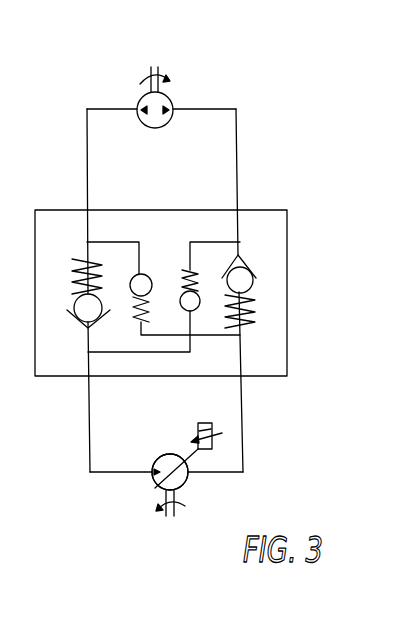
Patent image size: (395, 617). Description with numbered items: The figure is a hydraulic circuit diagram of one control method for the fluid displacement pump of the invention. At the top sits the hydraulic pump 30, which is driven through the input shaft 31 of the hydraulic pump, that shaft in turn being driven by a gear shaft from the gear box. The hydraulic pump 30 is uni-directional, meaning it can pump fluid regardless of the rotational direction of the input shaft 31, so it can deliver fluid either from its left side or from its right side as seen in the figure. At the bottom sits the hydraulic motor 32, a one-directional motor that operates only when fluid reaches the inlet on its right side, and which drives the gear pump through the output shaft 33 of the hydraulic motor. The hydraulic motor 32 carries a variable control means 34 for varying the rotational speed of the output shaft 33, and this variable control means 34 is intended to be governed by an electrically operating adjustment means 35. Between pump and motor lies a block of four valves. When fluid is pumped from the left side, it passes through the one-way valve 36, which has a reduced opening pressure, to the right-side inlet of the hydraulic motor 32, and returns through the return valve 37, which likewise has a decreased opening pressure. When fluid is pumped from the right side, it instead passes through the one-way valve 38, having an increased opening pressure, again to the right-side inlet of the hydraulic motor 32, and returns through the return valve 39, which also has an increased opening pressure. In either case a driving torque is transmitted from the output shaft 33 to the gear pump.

The hydraulic pump 30 is at (177, 96).
The input shaft of the hydraulic pump 31 is at (150, 66).
The hydraulic motor 32 is at (190, 485).
The output shaft of the hydraulic motor 33 is at (164, 511).
The variable control means 34 is at (150, 493).
The electrically operating adjustment means 35 is at (218, 440).
The one-way valve 36 is at (147, 272).
The return valve 37 is at (175, 266).
The one-way valve 38 is at (254, 257).
The return valve 39 is at (69, 258).